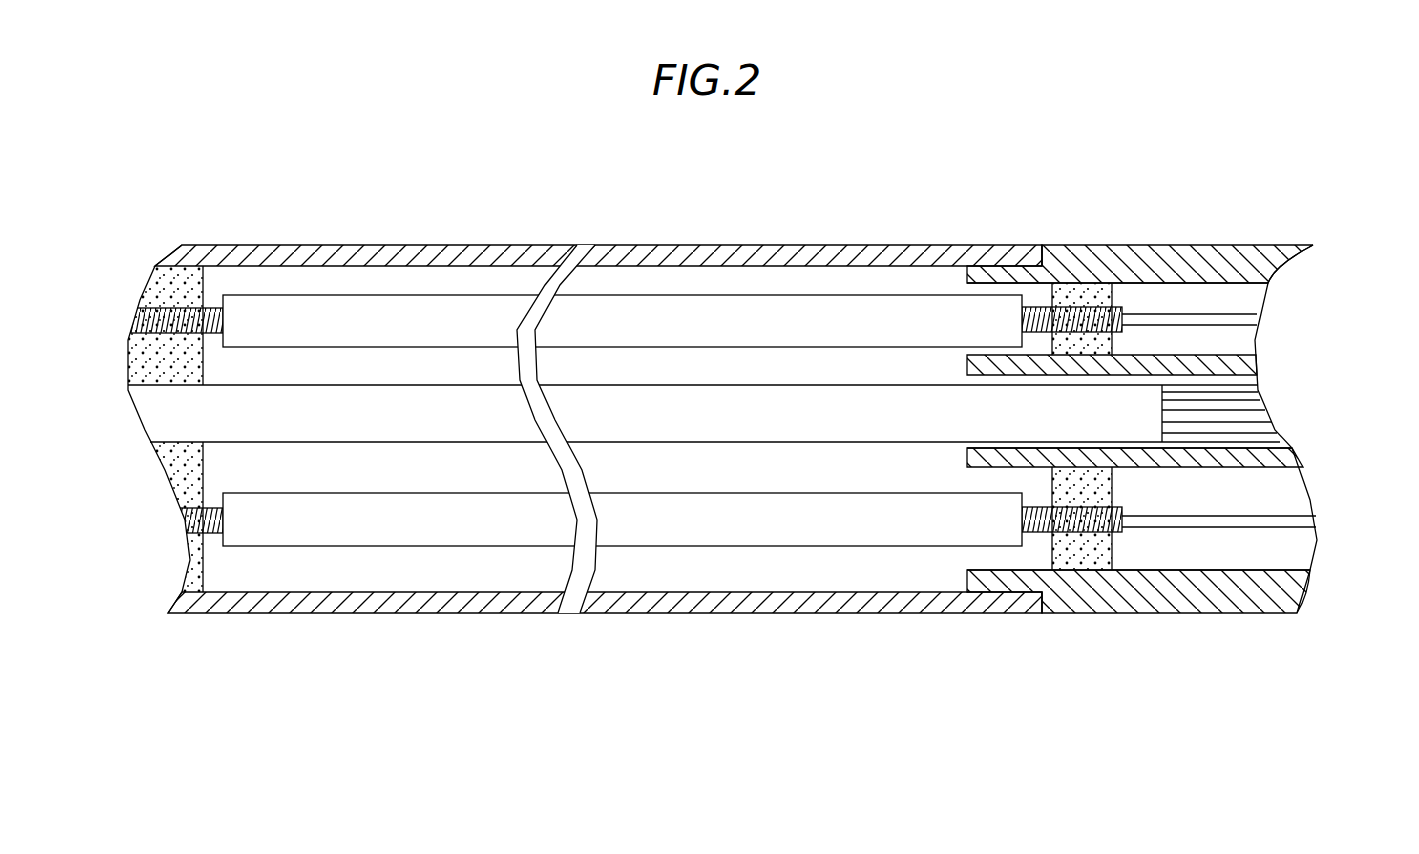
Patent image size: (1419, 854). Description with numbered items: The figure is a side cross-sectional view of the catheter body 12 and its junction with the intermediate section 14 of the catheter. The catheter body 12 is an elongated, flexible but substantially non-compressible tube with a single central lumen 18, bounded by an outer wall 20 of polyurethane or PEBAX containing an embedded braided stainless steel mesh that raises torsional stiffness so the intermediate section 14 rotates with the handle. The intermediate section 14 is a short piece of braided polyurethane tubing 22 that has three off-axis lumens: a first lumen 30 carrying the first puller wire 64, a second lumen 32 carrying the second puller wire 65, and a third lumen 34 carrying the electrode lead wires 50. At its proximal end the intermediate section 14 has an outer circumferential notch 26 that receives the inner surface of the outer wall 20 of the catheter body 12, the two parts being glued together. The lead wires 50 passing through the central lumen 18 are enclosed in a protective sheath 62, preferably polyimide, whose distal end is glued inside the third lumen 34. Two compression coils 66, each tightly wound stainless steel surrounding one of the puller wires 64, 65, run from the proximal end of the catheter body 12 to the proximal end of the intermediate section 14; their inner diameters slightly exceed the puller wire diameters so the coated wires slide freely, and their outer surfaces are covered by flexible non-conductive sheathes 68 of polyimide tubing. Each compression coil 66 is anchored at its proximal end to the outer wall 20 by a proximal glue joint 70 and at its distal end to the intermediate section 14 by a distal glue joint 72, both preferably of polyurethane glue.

The catheter body 12 is at (633, 626).
The intermediate section 14 is at (1238, 632).
The central lumen 18 is at (860, 465).
The outer wall 20 is at (822, 258).
The tubing 22 is at (1225, 255).
The outer circumferential notch 26 is at (1042, 595).
The first lumen 30 is at (1247, 292).
The second lumen 32 is at (1285, 488).
The third lumen 34 is at (1268, 438).
The lead wires 50 is at (1228, 418).
The protective sheath 62 is at (697, 390).
The first puller wire 64 is at (1183, 318).
The second puller wire 65 is at (1260, 525).
The compression coils 66 is at (160, 332).
The non-conductive sheathes 68 is at (740, 303).
The proximal glue joint 70 is at (203, 565).
The distal glue joint 72 is at (1127, 287).